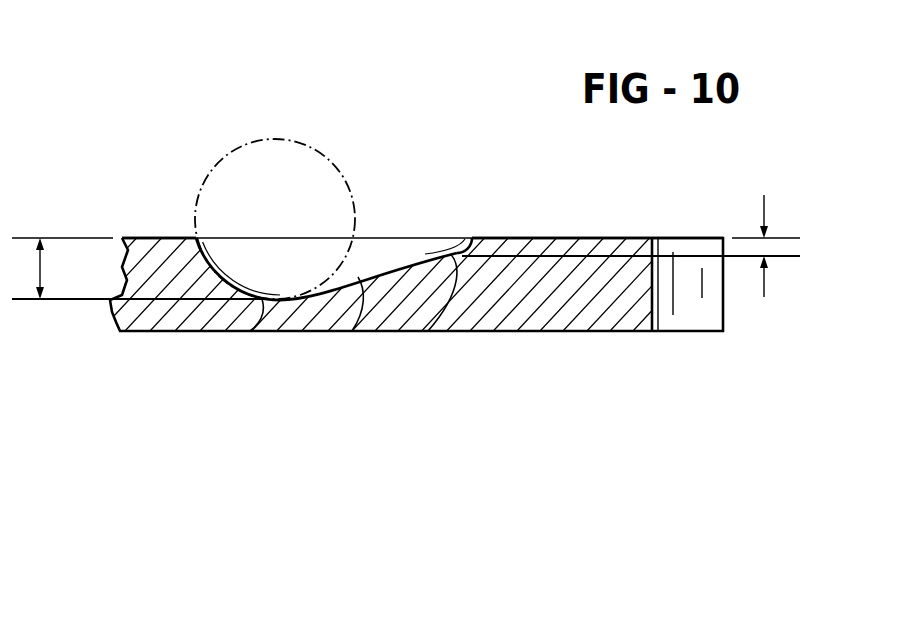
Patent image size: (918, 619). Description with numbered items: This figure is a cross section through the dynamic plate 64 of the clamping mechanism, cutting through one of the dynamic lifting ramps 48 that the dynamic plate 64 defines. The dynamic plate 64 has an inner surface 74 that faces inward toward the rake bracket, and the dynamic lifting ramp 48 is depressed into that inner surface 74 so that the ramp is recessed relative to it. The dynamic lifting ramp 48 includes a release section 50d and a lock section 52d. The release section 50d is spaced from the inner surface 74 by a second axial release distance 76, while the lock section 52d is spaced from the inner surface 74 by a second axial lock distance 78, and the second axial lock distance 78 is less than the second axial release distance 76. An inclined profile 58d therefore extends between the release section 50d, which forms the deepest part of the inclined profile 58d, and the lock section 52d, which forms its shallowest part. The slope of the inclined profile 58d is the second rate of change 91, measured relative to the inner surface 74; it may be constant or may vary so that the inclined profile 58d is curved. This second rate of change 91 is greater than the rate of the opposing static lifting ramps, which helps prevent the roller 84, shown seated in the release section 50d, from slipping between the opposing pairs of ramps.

The dynamic lifting ramp 48 is at (353, 331).
The release section 50d is at (249, 331).
The lock section 52d is at (429, 331).
The inclined profile 58d is at (395, 268).
The second rate of change 91 is at (415, 263).
The dynamic plate 64 is at (502, 238).
The inner surface 74 is at (148, 238).
The second axial release distance 76 is at (62, 268).
The second axial lock distance 78 is at (764, 297).
The roller 84 is at (277, 139).